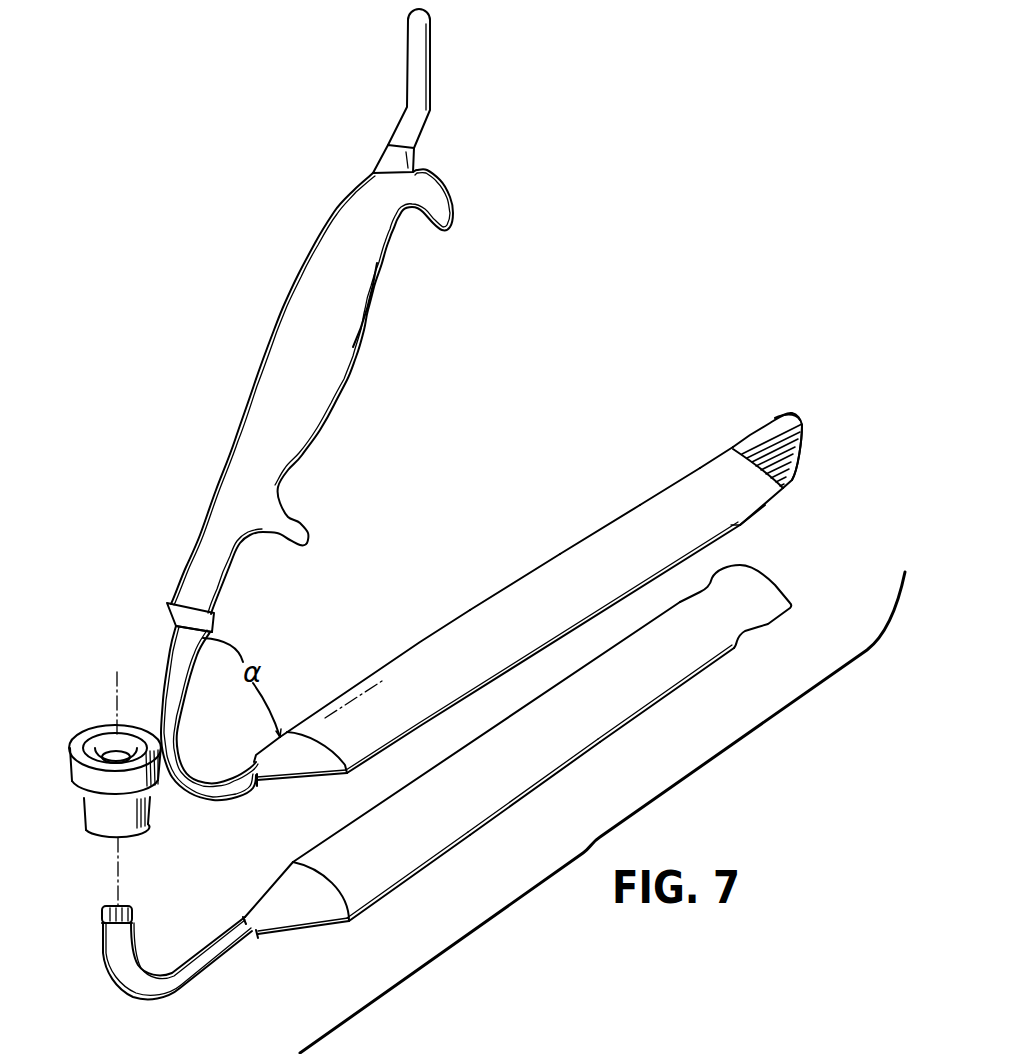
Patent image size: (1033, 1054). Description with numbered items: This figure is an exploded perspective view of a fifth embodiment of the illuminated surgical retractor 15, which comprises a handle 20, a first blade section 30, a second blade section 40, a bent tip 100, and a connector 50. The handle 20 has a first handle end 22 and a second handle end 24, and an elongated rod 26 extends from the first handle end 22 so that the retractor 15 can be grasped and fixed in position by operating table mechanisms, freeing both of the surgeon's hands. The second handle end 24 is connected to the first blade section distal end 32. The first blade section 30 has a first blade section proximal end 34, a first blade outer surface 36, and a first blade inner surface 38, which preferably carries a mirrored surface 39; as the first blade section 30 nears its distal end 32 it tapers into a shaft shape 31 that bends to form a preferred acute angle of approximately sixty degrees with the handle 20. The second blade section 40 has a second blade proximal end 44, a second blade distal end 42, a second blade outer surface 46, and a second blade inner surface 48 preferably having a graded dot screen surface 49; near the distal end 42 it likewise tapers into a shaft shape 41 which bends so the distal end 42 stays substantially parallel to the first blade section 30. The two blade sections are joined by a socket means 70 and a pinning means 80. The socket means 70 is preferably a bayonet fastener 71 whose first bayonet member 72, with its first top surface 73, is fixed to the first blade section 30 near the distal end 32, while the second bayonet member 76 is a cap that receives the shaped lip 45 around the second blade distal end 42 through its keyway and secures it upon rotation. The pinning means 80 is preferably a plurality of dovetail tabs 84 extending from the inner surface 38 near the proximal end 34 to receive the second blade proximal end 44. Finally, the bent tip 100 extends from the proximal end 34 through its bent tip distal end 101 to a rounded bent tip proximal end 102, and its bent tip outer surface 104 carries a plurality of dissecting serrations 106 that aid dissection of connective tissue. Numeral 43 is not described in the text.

The illuminated retractor 15 is at (354, 348).
The handle 20 is at (285, 319).
The first handle end 22 is at (413, 156).
The second handle end 24 is at (170, 605).
The elongated rod 26 is at (412, 63).
The first blade section 30 is at (520, 580).
The shaft shape 31 is at (187, 800).
The first blade section distal end 32 is at (175, 624).
The first blade section proximal end 34 is at (727, 449).
The first blade outer surface 36 is at (430, 637).
The first blade inner surface 38 is at (665, 490).
The mirrored surface 39 is at (598, 531).
The second blade section 40 is at (612, 735).
The shaft shape 41 is at (125, 987).
The second blade distal end 42 is at (105, 905).
The knurling 43 is at (128, 907).
The second blade proximal end 44 is at (791, 610).
The shaped lip 45 is at (103, 923).
The second blade outer surface 46 is at (375, 897).
The second blade inner surface 48 is at (548, 780).
The graded dot screen surface 49 is at (465, 839).
The connector 50 is at (103, 737).
The socket means 70 is at (127, 823).
The bayonet fastener 71 is at (70, 767).
The first bayonet member 72 is at (93, 792).
The first top surface 73 is at (137, 722).
The second bayonet member 76 is at (97, 832).
The pinning means 80 is at (747, 526).
The tabs 84 is at (757, 514).
The bent tip 100 is at (798, 470).
The bent tip distal end 101 is at (733, 447).
The bent tip proximal end 102 is at (813, 373).
The bent tip outer surface 104 is at (783, 418).
The dissecting serrations 106 is at (804, 445).